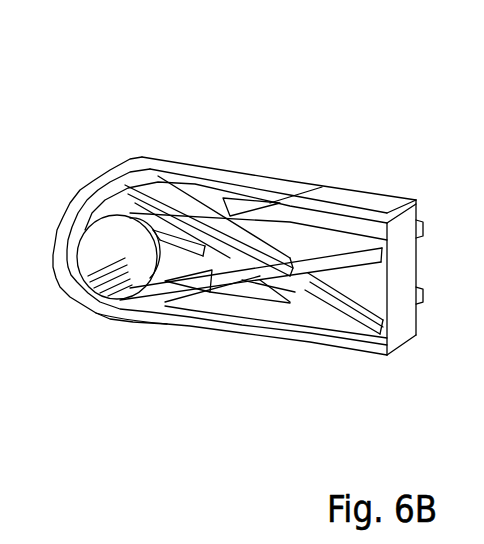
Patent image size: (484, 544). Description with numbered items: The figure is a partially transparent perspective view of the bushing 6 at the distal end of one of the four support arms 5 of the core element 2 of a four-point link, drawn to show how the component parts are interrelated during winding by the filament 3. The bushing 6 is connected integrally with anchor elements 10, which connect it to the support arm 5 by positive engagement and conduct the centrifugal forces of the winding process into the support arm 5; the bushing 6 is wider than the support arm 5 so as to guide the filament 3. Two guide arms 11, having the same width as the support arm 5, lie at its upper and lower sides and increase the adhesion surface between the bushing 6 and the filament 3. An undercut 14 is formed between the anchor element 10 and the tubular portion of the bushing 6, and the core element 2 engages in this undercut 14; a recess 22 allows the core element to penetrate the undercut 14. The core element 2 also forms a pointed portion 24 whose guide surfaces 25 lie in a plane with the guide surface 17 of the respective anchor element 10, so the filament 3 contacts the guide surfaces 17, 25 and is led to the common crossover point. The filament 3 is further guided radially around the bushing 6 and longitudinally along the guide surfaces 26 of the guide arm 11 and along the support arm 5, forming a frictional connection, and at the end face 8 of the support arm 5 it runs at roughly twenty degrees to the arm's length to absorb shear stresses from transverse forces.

The core element 2 is at (327, 325).
The filament 3 is at (85, 207).
The support arm 5 is at (374, 168).
The bushing 6 is at (78, 233).
The end face 8 is at (307, 253).
The anchor element 10 is at (193, 205).
The guide arm 11 is at (213, 193).
The undercut 14 is at (97, 309).
The guide surface 17 is at (175, 213).
The recess 22 is at (304, 374).
The portion 24 is at (272, 374).
The guide surface 25 is at (245, 235).
The guide surface 26 is at (230, 205).